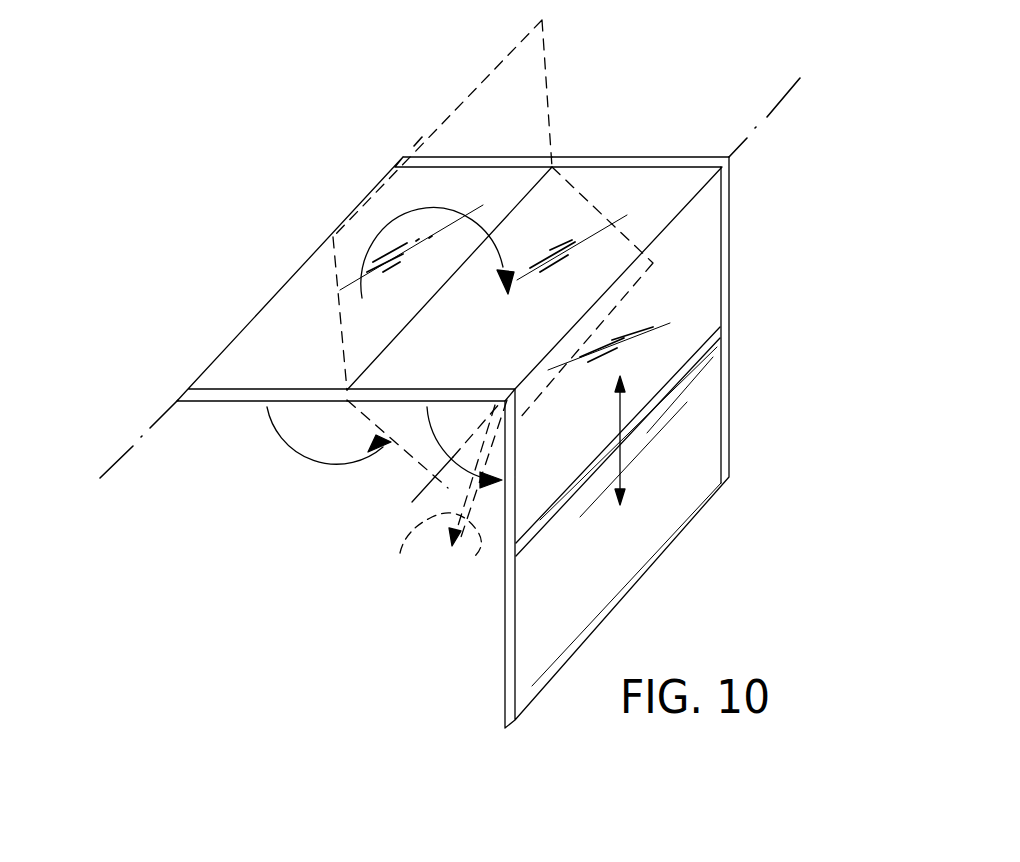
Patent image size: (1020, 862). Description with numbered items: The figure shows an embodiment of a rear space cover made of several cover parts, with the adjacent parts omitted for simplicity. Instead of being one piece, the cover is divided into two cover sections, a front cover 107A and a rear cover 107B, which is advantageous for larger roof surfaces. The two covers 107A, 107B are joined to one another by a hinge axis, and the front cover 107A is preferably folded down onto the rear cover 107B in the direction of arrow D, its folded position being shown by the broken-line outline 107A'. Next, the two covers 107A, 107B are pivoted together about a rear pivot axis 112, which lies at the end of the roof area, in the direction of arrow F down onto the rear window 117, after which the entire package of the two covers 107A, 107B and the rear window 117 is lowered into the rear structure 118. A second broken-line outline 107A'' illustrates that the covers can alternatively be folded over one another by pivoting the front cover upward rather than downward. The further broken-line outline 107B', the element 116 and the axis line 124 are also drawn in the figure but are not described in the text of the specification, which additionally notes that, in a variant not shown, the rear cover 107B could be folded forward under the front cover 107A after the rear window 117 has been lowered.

The front cover 107A is at (364, 269).
The rear cover 107B is at (538, 227).
The outline of front cover folded down 107A' is at (407, 516).
The outline of front cover folded upward 107A'' is at (495, 213).
The second plate portion in folded position 107B' is at (432, 495).
The rear pivot axis 112 is at (788, 93).
The side wall plate 116 is at (710, 442).
The rear window 117 is at (693, 270).
The rear structure 118 is at (690, 450).
The fold axis 124 is at (133, 441).
The arrow D is at (287, 447).
The arrow F is at (464, 447).